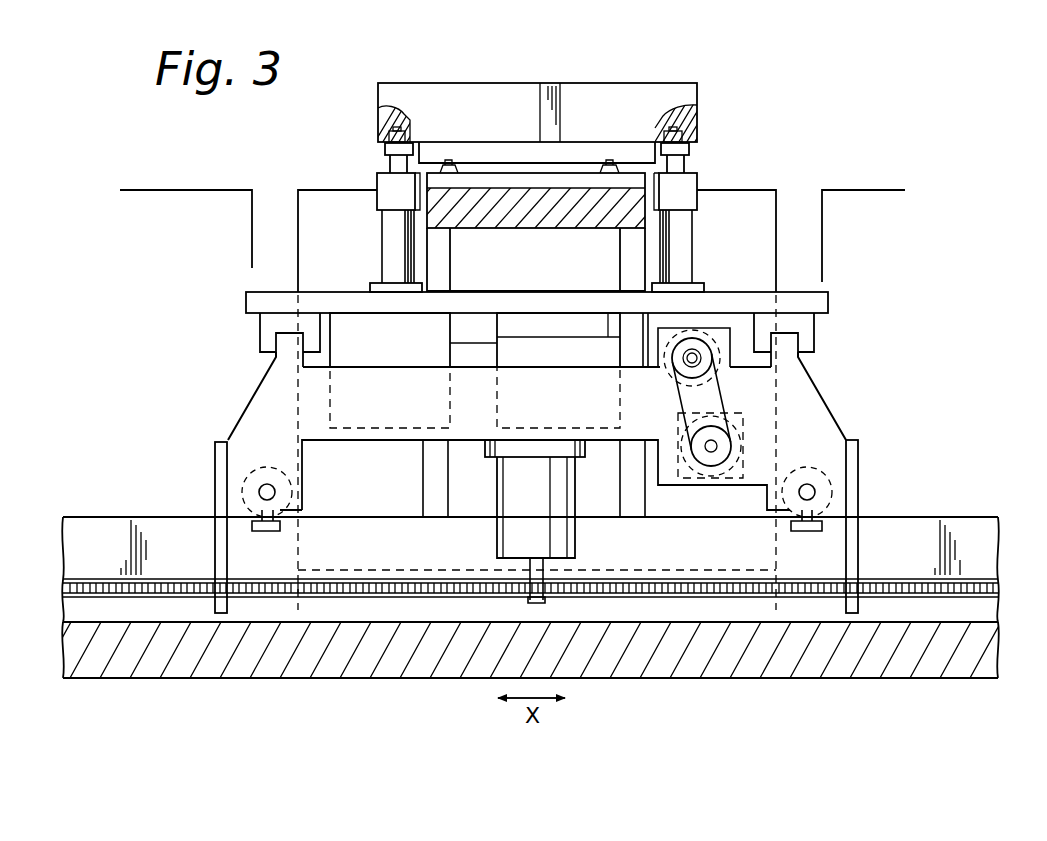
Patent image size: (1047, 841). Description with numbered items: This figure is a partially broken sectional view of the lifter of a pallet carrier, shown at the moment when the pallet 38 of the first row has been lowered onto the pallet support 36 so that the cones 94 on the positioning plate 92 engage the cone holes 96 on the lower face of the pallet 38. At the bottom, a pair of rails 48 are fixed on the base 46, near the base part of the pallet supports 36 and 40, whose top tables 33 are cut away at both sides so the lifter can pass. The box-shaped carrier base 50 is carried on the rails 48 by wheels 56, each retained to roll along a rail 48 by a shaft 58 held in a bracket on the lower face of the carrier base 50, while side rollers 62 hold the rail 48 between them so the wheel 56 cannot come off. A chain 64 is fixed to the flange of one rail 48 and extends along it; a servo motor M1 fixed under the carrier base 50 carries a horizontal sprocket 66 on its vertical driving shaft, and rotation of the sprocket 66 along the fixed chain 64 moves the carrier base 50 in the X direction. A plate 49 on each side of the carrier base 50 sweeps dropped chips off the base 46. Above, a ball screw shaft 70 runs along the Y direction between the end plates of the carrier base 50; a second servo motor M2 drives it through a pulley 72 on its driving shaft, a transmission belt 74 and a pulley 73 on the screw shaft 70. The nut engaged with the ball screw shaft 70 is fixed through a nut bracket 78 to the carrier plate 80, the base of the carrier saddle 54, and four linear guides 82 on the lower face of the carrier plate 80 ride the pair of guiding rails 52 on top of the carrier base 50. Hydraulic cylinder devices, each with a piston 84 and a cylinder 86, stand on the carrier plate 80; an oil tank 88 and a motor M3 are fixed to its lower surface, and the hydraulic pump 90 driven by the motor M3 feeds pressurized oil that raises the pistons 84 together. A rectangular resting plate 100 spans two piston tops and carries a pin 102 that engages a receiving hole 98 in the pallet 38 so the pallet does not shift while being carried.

The top table 33 is at (560, 207).
The pallet support 36 is at (440, 205).
The pallet 38 is at (580, 110).
The pallet support 40 is at (330, 202).
The base 46 is at (905, 660).
The rail 48 is at (965, 518).
The plate 49 is at (218, 540).
The carrier base 50 is at (315, 400).
The guiding rail 52 is at (813, 337).
The carrier saddle 54 is at (244, 307).
The wheel 56 is at (818, 462).
The shaft 58 is at (807, 492).
The side roller 62 is at (822, 527).
The chain 64 is at (673, 587).
The sprocket 66 is at (540, 600).
The ball screw shaft 70 is at (705, 340).
The pulley 72 is at (832, 435).
The pulley 73 is at (787, 347).
The transmission belt 74 is at (715, 382).
The nut bracket 78 is at (745, 283).
The carrier plate 80 is at (815, 298).
The linear guide 82 is at (800, 325).
The piston 84 is at (685, 166).
The cylinder 86 is at (683, 185).
The oil tank 88 is at (345, 352).
The hydraulic pump 90 is at (443, 352).
The positioning plate 92 is at (512, 180).
The cone 94 is at (438, 162).
The cone hole 96 is at (462, 172).
The receiving hole 98 is at (695, 112).
The resting plate 100 is at (690, 150).
The pin 102 is at (693, 128).
The servo motor M1 is at (562, 535).
The servo motor M2 is at (743, 413).
The motor M3 is at (523, 352).